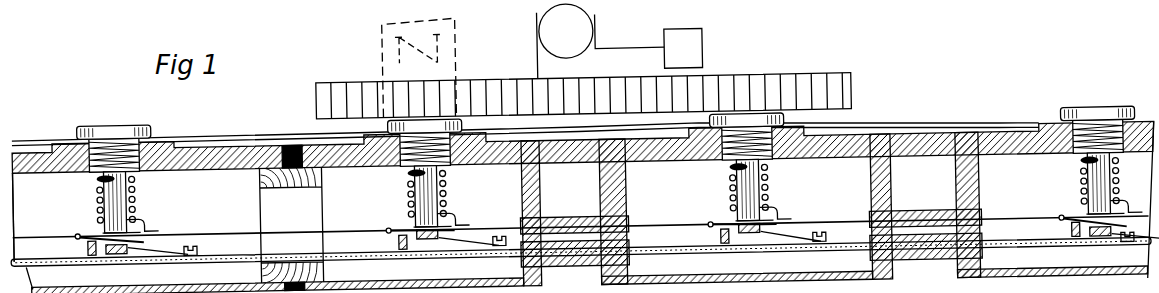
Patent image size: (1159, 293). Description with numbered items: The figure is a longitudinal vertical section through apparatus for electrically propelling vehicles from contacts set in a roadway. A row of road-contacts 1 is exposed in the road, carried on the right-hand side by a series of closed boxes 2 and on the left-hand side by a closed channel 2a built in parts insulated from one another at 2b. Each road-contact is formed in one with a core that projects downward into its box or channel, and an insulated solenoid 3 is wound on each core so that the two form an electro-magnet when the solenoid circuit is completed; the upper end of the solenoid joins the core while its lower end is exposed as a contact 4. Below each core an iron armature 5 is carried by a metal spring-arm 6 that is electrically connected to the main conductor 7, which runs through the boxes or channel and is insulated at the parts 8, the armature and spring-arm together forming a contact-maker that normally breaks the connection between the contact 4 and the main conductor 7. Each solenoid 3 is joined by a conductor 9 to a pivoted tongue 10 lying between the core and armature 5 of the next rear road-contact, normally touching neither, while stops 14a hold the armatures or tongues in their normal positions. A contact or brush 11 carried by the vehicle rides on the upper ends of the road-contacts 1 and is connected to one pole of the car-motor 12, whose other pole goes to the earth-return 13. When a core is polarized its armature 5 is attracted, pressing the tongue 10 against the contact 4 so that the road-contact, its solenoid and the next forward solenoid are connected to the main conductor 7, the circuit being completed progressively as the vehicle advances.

The road-contact 1 is at (106, 136).
The closed box 2 is at (584, 203).
The closed channel 2a is at (118, 215).
The insulation 2b is at (292, 211).
The solenoid 3 is at (134, 193).
The contact 4 is at (150, 231).
The armature 5 is at (114, 256).
The spring-arm 6 is at (150, 259).
The main conductor 7 is at (581, 262).
The insulated parts 8 is at (575, 229).
The conductor 9 is at (580, 214).
The pivoted tongue 10 is at (84, 232).
The car-contact 11 is at (583, 65).
The car-motor 12 is at (600, 40).
The earth-return 13 is at (683, 48).
The stop 14a is at (87, 254).